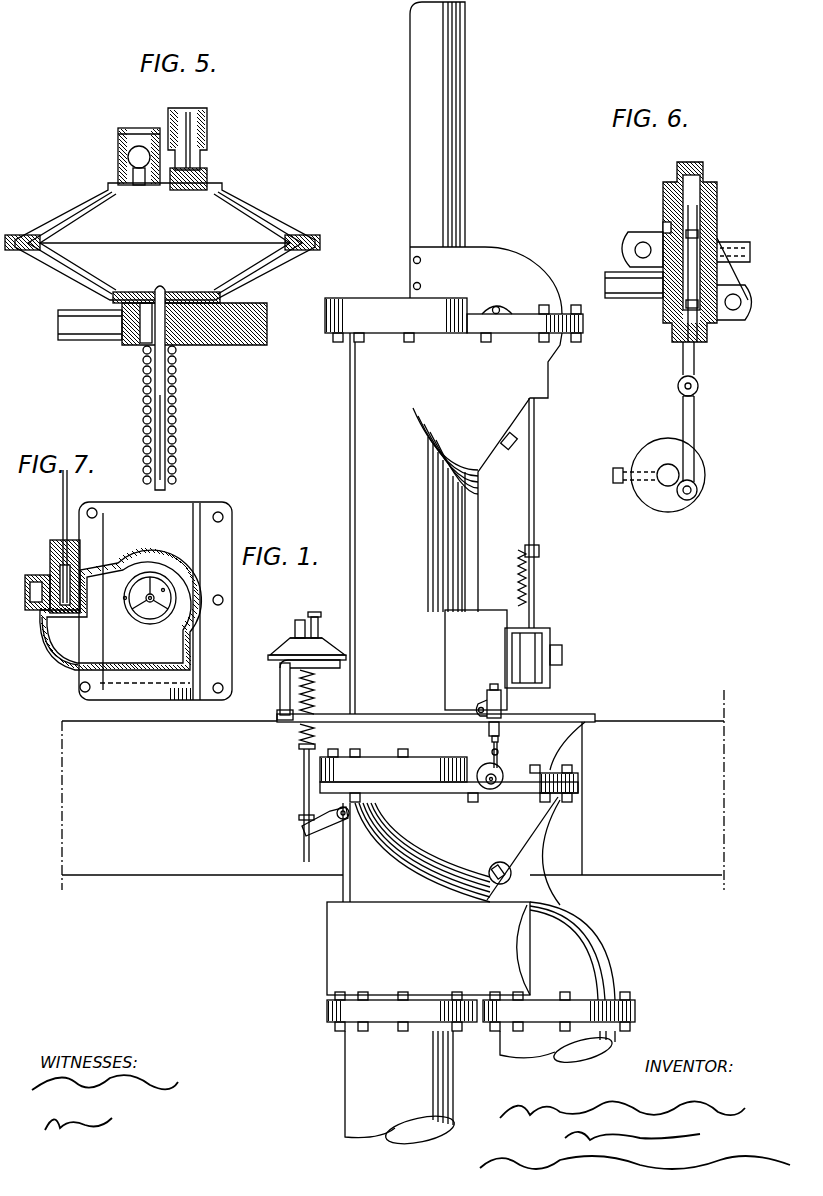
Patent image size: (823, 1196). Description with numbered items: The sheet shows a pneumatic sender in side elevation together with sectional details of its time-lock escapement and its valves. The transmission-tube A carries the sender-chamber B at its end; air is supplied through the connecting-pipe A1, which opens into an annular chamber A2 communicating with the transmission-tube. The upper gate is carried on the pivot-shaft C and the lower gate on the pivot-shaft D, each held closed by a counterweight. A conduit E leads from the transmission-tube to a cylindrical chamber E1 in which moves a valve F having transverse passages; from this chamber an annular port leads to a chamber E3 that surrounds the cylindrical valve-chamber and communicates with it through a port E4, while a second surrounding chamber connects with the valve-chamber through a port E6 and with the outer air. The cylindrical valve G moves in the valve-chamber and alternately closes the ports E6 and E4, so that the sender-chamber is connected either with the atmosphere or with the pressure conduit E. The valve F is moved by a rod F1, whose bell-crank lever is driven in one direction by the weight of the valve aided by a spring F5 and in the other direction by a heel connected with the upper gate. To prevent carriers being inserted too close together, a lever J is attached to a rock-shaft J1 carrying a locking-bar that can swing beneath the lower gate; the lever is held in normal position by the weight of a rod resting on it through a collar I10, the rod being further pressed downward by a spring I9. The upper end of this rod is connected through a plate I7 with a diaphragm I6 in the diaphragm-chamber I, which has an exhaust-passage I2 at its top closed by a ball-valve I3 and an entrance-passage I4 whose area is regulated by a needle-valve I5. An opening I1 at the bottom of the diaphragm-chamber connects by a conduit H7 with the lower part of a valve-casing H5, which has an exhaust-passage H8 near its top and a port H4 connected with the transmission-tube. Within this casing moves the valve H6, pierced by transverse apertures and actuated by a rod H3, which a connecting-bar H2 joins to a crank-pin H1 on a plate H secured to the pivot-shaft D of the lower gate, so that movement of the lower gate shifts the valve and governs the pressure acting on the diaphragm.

In FIG. 1, the transmission-tube A is at (401, 1090).
In FIG. 1, the connecting-pipe A1 is at (578, 1048).
In FIG. 1, the annular chamber A2 is at (471, 951).
In FIG. 1, the sender-chamber B is at (455, 453).
In FIG. 7, the pivot-shaft C is at (28, 605).
In FIG. 1, the pivot-shaft D is at (485, 766).
In FIG. 6, the pivot-shaft D is at (666, 480).
In FIG. 7, the conduit E is at (136, 601).
In FIG. 7, the cylindrical chamber E1 is at (50, 556).
In FIG. 7, the chamber E3 is at (111, 601).
In FIG. 7, the port E4 is at (146, 573).
In FIG. 7, the port E6 is at (163, 588).
In FIG. 7, the valve F is at (45, 650).
In FIG. 1, the rod F1 is at (536, 522).
In FIG. 7, the rod F1 is at (62, 500).
In FIG. 1, the spring F5 is at (518, 582).
In FIG. 7, the cylindrical valve G is at (150, 609).
In FIG. 1, the plate H is at (500, 755).
In FIG. 6, the plate H is at (697, 475).
In FIG. 1, the crank-pin H1 is at (493, 784).
In FIG. 6, the crank-pin H1 is at (698, 492).
In FIG. 6, the connecting-bar H2 is at (695, 420).
In FIG. 1, the rod H3 is at (500, 740).
In FIG. 6, the rod H3 is at (695, 375).
In FIG. 6, the port H4 is at (718, 238).
In FIG. 1, the valve-casing H5 is at (488, 700).
In FIG. 6, the valve-casing H5 is at (718, 280).
In FIG. 6, the valve H6 is at (751, 250).
In FIG. 1, the conduit H7 is at (280, 685).
In FIG. 5, the conduit H7 is at (92, 340).
In FIG. 6, the conduit H7 is at (645, 300).
In FIG. 6, the exhaust-passage H8 is at (665, 226).
In FIG. 1, the diaphragm-chamber I is at (285, 643).
In FIG. 5, the diaphragm-chamber I is at (262, 268).
In FIG. 5, the opening I1 is at (142, 345).
In FIG. 1, the exhaust-passage I2 is at (295, 625).
In FIG. 5, the exhaust-passage I2 is at (118, 173).
In FIG. 5, the ball-valve I3 is at (120, 142).
In FIG. 1, the entrance-passage I4 is at (322, 628).
In FIG. 5, the entrance-passage I4 is at (207, 178).
In FIG. 1, the needle-valve I5 is at (304, 778).
In FIG. 5, the needle-valve I5 is at (178, 406).
In FIG. 5, the diaphragm I6 is at (207, 145).
In FIG. 5, the plate I7 is at (185, 292).
In FIG. 1, the spring I9 is at (300, 746).
In FIG. 5, the spring I9 is at (176, 448).
In FIG. 1, the collar I10 is at (299, 818).
In FIG. 1, the lever J is at (318, 838).
In FIG. 1, the rock-shaft J1 is at (348, 820).